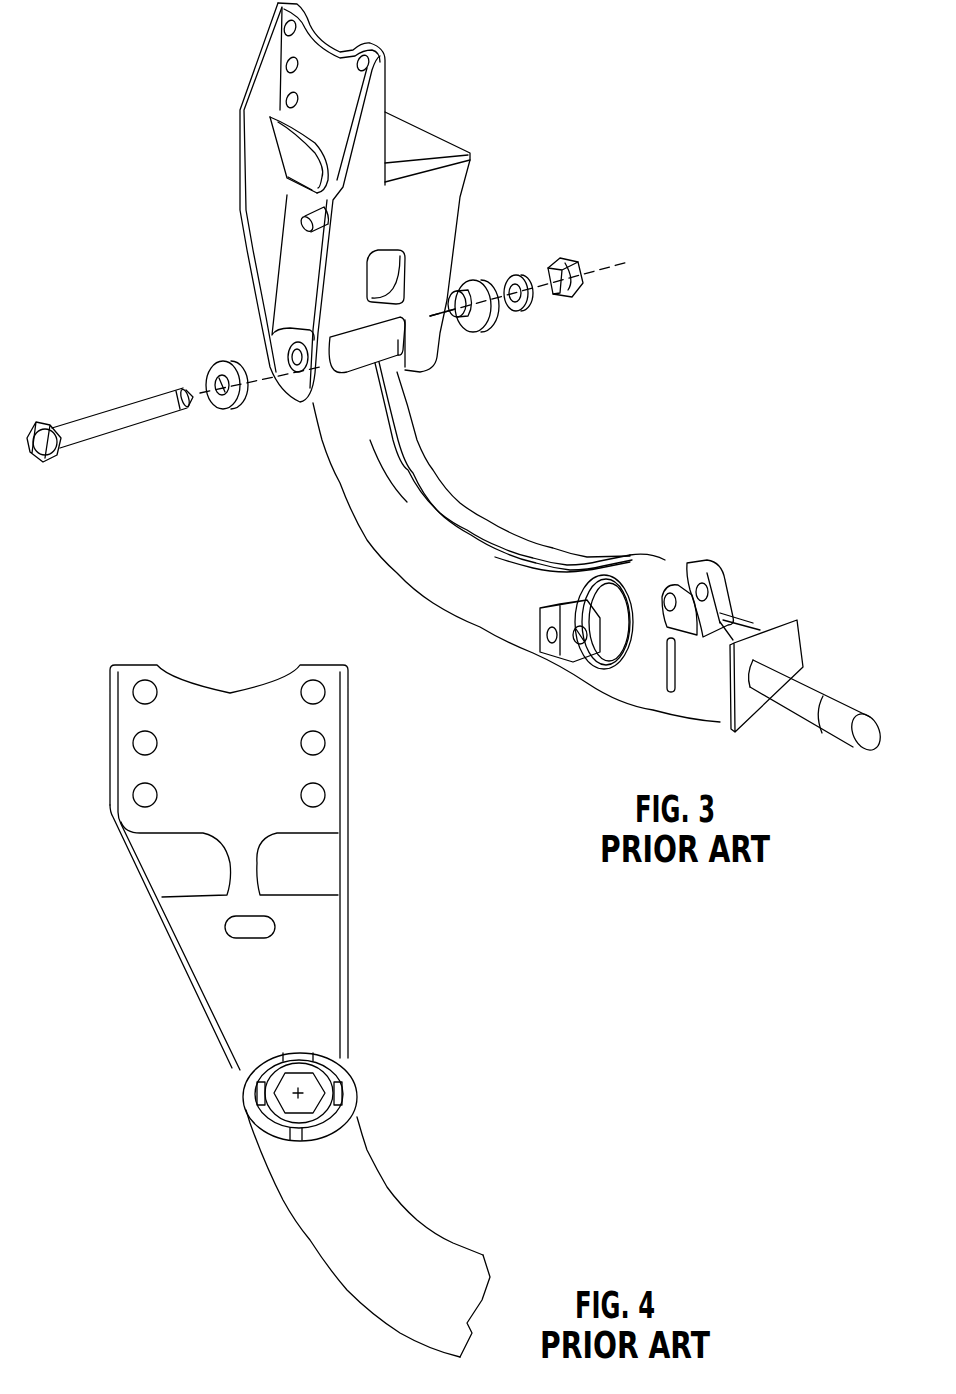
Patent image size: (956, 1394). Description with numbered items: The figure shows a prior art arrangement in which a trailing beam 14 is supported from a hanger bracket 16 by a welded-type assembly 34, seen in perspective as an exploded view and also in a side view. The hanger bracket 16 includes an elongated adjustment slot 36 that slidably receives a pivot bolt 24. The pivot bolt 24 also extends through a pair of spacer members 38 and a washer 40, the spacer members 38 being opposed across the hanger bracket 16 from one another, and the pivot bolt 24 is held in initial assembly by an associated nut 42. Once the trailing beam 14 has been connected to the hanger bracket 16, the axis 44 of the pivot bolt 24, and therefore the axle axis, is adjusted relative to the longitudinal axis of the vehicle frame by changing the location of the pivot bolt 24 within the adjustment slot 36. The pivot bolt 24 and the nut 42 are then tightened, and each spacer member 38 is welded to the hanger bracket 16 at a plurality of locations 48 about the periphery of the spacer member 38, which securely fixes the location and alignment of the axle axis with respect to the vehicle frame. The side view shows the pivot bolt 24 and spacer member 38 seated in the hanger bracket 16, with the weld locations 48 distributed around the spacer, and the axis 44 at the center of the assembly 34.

In FIG. 3, the trailing beam 14 is at (370, 543).
In FIG. 4, the trailing beam 14 is at (283, 1207).
In FIG. 3, the hanger bracket 16 is at (240, 210).
In FIG. 4, the hanger bracket 16 is at (143, 888).
In FIG. 3, the pivot bolt 24 is at (133, 418).
In FIG. 4, the pivot bolt 24 is at (280, 1078).
In FIG. 3, the welded-type assembly 34 is at (485, 249).
In FIG. 4, the welded-type assembly 34 is at (338, 1066).
In FIG. 3, the adjustment slot 36 is at (300, 398).
In FIG. 3, the spacer member 38 is at (245, 405).
In FIG. 4, the spacer member 38 is at (313, 1065).
In FIG. 3, the washer 40 is at (537, 303).
In FIG. 3, the nut 42 is at (582, 290).
In FIG. 3, the axis 44 is at (627, 260).
In FIG. 4, the axis 44 is at (297, 1097).
In FIG. 4, the locations 48 is at (340, 1088).